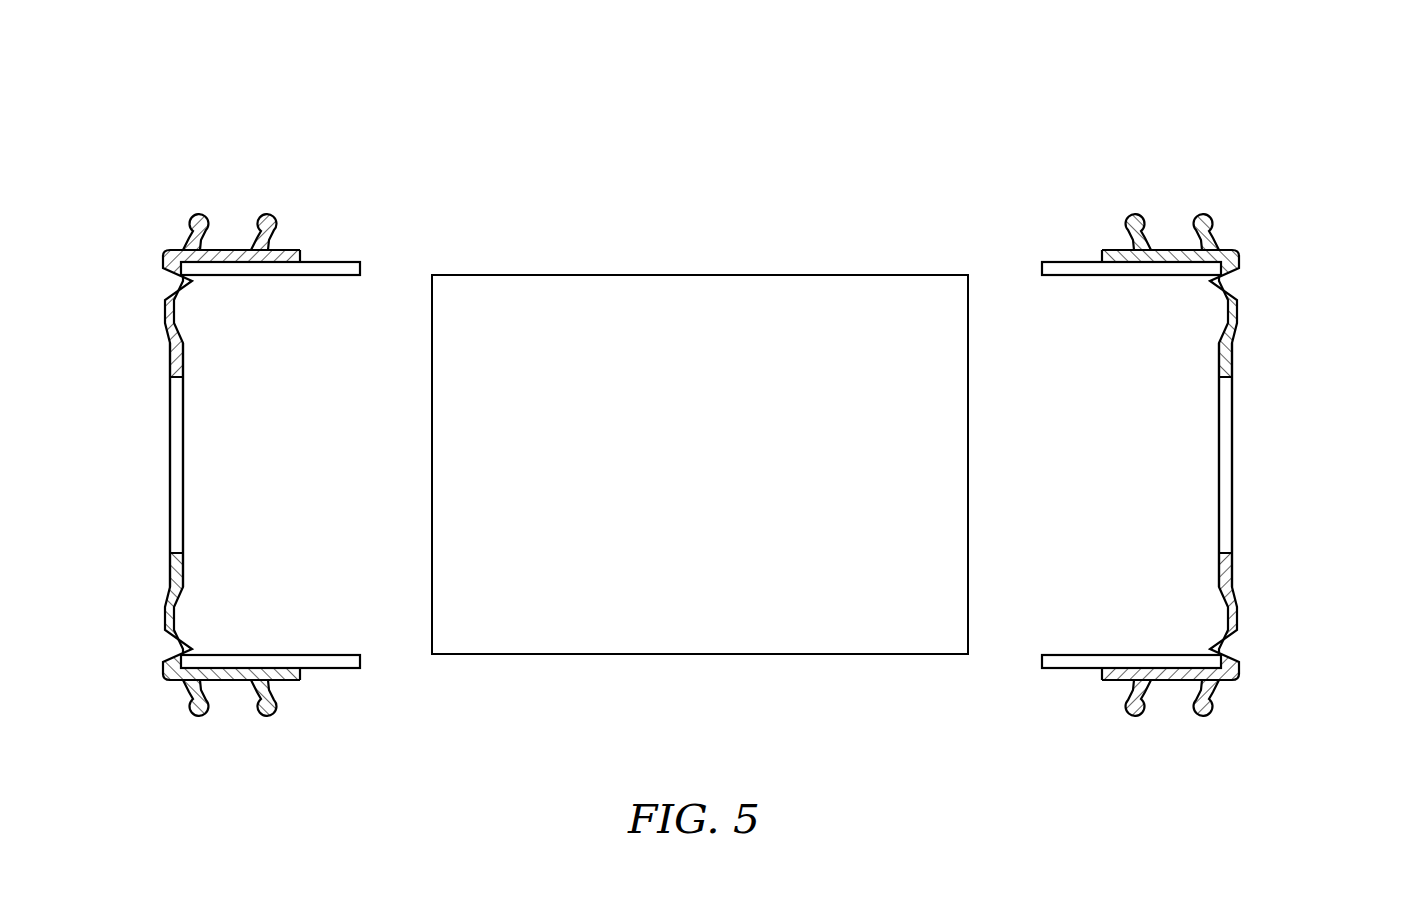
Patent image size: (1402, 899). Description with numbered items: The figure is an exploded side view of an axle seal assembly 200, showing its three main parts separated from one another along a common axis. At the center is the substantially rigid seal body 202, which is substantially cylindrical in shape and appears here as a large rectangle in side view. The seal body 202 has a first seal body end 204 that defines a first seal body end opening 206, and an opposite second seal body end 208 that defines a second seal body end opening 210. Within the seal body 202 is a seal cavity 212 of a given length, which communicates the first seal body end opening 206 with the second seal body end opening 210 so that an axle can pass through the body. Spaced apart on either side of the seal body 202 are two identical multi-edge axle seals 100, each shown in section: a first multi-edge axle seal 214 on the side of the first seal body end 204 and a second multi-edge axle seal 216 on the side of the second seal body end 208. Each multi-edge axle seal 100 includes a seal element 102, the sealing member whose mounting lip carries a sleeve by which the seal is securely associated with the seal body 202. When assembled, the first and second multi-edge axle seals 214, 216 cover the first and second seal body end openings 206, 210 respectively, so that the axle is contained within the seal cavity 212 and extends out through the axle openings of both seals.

The axle seal assembly 200 is at (1203, 130).
The seal body 202 is at (710, 275).
The first seal body end 204 is at (440, 656).
The first seal body end opening 206 is at (432, 458).
The second seal body end 208 is at (962, 657).
The second seal body end opening 210 is at (968, 478).
The seal cavity 212 is at (722, 495).
The multi-edge axle seal 100 is at (701, 465).
The seal element 102 is at (170, 358).
The first multi-edge axle seal 214 is at (170, 585).
The second multi-edge axle seal 216 is at (1233, 568).